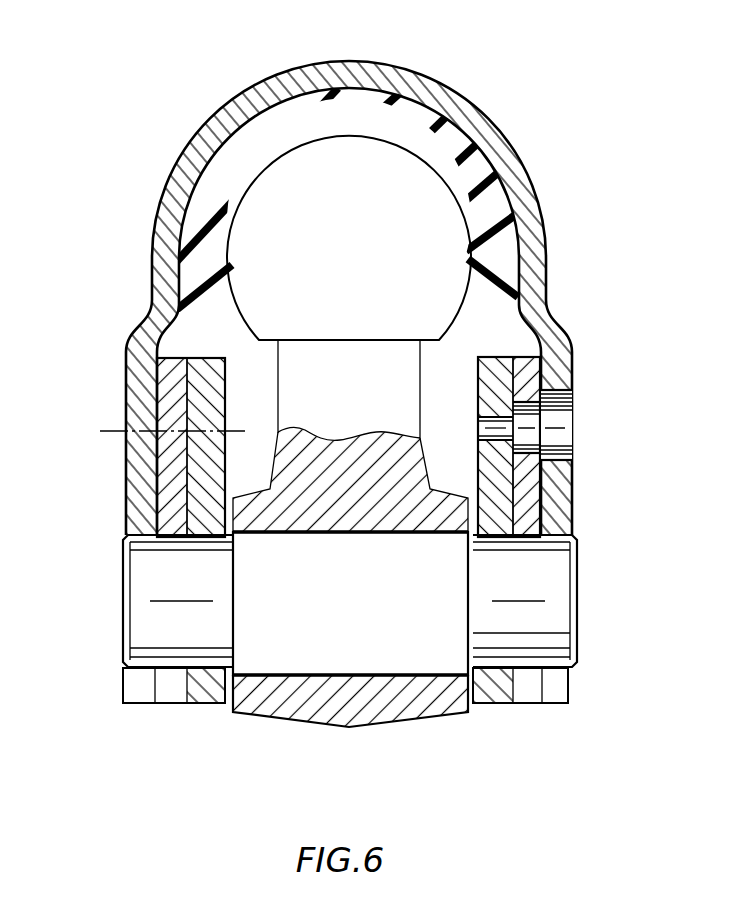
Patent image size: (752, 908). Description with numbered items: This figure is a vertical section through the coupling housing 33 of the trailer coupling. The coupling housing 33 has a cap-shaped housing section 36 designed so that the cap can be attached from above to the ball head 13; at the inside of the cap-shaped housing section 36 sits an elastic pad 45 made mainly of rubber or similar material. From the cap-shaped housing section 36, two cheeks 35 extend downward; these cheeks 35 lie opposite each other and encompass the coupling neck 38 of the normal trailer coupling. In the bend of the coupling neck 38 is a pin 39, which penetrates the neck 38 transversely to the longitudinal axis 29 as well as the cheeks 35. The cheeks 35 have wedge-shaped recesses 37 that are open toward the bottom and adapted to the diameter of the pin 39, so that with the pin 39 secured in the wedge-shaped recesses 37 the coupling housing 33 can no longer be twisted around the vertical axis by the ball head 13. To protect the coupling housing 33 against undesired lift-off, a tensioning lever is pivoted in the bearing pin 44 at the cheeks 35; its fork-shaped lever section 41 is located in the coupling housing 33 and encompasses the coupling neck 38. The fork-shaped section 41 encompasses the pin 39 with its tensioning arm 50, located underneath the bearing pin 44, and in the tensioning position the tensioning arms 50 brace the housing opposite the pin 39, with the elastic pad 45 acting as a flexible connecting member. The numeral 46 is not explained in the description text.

The ball head 13 is at (397, 215).
The longitudinal axis 29 is at (348, 606).
The coupling housing 33 is at (345, 278).
The cheeks 35 is at (127, 494).
The cap-shaped housing section 36 is at (397, 93).
The wedge-shaped recesses 37 is at (169, 690).
The coupling neck 38 is at (311, 703).
The pin 39 is at (143, 627).
The fork-shaped lever section 41 is at (237, 401).
The bearing pin 44 is at (113, 431).
The elastic pad 45 is at (300, 123).
The mounting disc 46 is at (350, 729).
The tensioning arm 50 is at (204, 690).